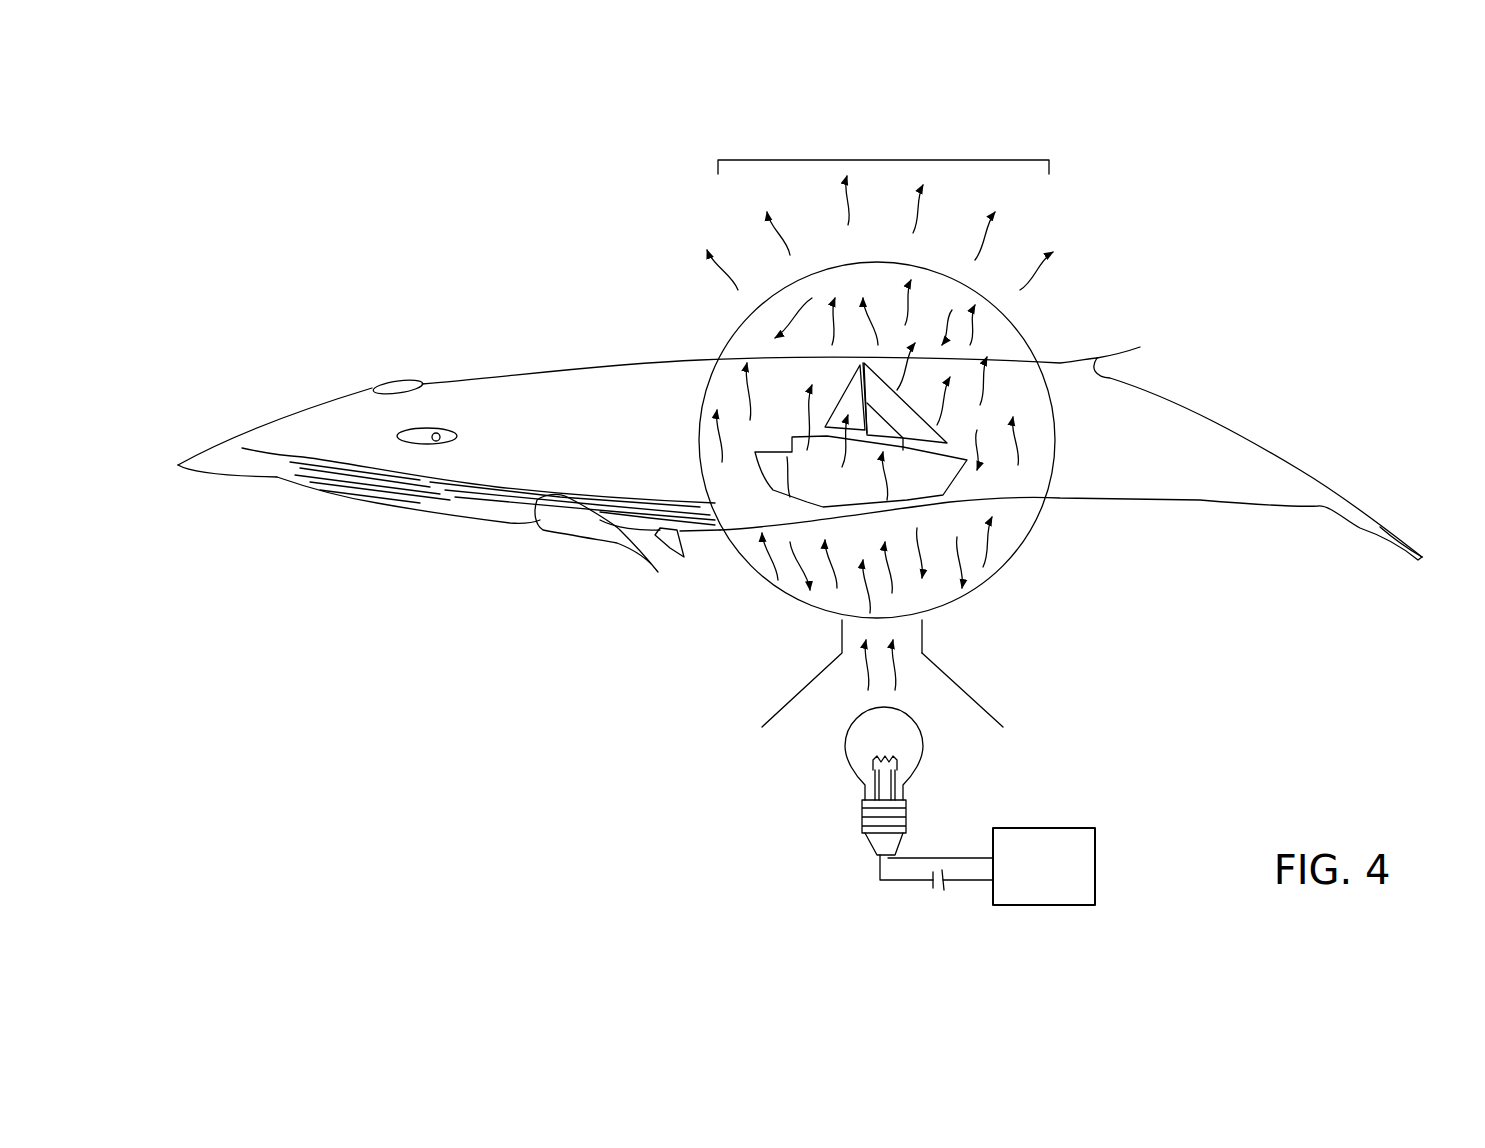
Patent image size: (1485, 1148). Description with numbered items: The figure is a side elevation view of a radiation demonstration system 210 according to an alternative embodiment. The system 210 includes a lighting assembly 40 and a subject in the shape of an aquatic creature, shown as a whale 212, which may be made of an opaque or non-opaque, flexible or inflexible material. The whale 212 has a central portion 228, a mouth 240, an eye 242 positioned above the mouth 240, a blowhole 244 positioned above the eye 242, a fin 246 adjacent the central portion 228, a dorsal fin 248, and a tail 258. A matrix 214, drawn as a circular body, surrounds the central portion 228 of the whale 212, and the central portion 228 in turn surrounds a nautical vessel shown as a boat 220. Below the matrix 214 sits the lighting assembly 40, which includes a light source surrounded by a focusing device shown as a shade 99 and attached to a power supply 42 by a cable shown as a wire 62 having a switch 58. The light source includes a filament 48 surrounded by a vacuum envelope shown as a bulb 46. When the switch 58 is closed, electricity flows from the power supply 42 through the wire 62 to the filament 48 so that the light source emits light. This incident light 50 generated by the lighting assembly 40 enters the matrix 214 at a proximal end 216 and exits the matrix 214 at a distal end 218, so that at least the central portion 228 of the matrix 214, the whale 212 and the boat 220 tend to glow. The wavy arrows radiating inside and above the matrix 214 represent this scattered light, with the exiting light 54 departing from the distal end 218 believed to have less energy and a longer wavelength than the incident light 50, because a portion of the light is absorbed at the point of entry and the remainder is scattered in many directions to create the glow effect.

The radiation demonstration system 210 is at (435, 227).
The whale 212 is at (268, 372).
The matrix 214 is at (1057, 442).
The proximal end 216 is at (828, 632).
The distal end 218 is at (995, 285).
The boat 220 is at (758, 478).
The central portion 228 is at (886, 157).
The mouth 240 is at (277, 478).
The eye 242 is at (432, 430).
The blowhole 244 is at (395, 383).
The fin 246 is at (592, 552).
The dorsal fin 248 is at (1140, 347).
The tail 258 is at (1380, 527).
The exiting light 54 is at (1100, 230).
The shade 99 is at (972, 700).
The incident light 50 is at (930, 690).
The lighting assembly 40 is at (1005, 814).
The bulb 46 is at (845, 755).
The filament 48 is at (888, 762).
The wire 62 is at (940, 858).
The switch 58 is at (944, 888).
The power supply 42 is at (1097, 865).